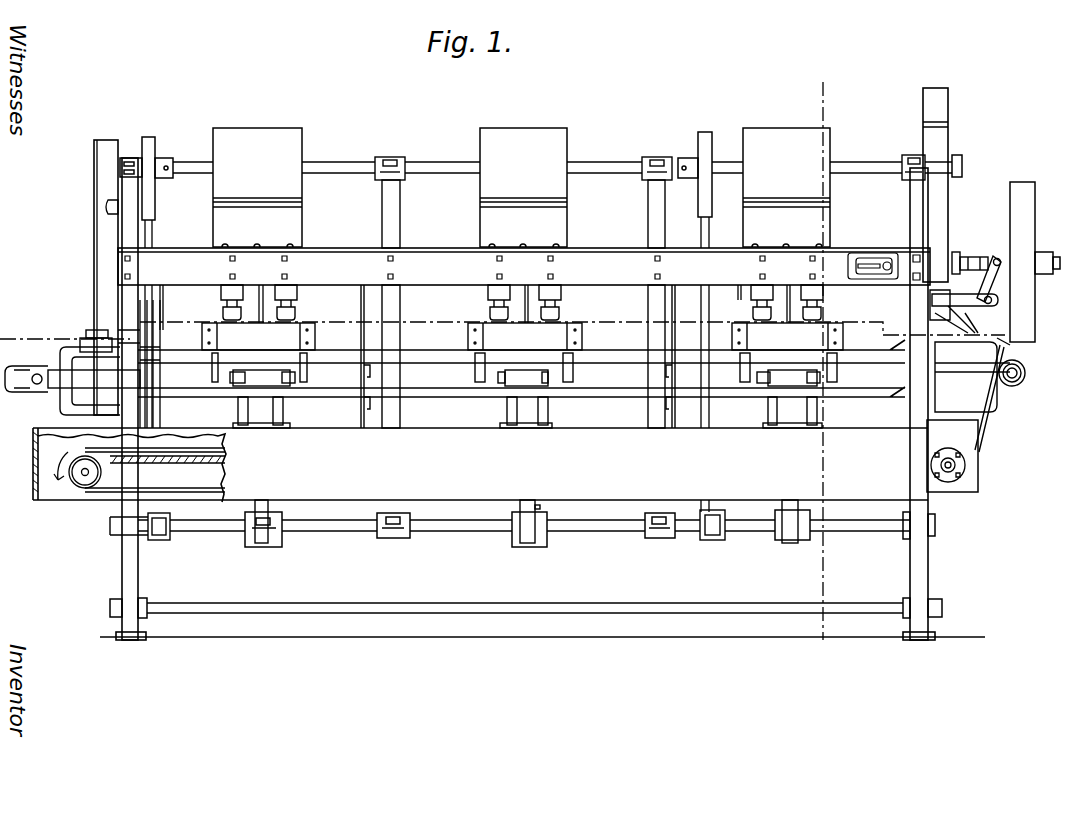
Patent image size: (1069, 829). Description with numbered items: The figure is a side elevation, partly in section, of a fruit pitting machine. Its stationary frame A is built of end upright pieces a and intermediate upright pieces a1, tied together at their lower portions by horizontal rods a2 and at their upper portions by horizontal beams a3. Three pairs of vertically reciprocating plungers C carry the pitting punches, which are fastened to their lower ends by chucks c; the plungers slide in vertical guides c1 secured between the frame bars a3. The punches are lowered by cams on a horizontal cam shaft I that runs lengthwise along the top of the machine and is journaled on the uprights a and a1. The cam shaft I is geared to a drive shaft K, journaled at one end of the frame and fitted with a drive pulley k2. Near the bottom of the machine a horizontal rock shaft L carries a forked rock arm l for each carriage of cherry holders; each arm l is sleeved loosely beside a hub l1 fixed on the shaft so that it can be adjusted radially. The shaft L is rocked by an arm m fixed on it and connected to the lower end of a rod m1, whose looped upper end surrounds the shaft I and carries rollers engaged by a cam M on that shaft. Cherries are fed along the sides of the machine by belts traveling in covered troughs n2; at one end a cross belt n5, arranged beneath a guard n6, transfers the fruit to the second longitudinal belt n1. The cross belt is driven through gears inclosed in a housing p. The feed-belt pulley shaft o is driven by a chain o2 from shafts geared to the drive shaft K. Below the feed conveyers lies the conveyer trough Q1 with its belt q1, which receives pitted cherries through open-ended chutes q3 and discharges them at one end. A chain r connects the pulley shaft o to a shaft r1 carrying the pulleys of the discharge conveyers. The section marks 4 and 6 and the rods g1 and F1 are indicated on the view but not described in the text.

The stationary frame A is at (122, 563).
The end upright pieces a is at (138, 562).
The intermediate upright pieces a1 is at (398, 308).
The horizontal rods a2 is at (403, 603).
The horizontal beams or bars a3 is at (524, 266).
The cam shaft I is at (600, 160).
The cam M is at (163, 162).
The rock arm m is at (170, 535).
The rod m1 is at (153, 236).
The gear housing p is at (161, 298).
The section line 4 is at (850, 628).
The plungers or holders C is at (222, 301).
The chucks c is at (292, 302).
The vertical guides or bearings c1 is at (808, 292).
The guide rod g1 is at (259, 292).
The covered trough or box n2 is at (610, 352).
The crosshead F1 is at (262, 370).
The open-ended chutes q3 is at (280, 408).
The rock arm l is at (282, 422).
The conveyer trough Q1 is at (480, 465).
The conveyer or belt q1 is at (158, 494).
The rock shaft L is at (348, 532).
The hub l1 is at (266, 505).
The cross belt n5 is at (86, 362).
The guard n6 is at (90, 325).
The drive pulley k2 is at (1025, 215).
The drive shaft K is at (993, 256).
The chain o2 is at (933, 333).
The pulley shaft o is at (1026, 376).
The section line 6 is at (1062, 366).
The feed belt or conveyer n1 is at (1020, 382).
The chain r is at (1030, 425).
The shaft r1 is at (966, 465).